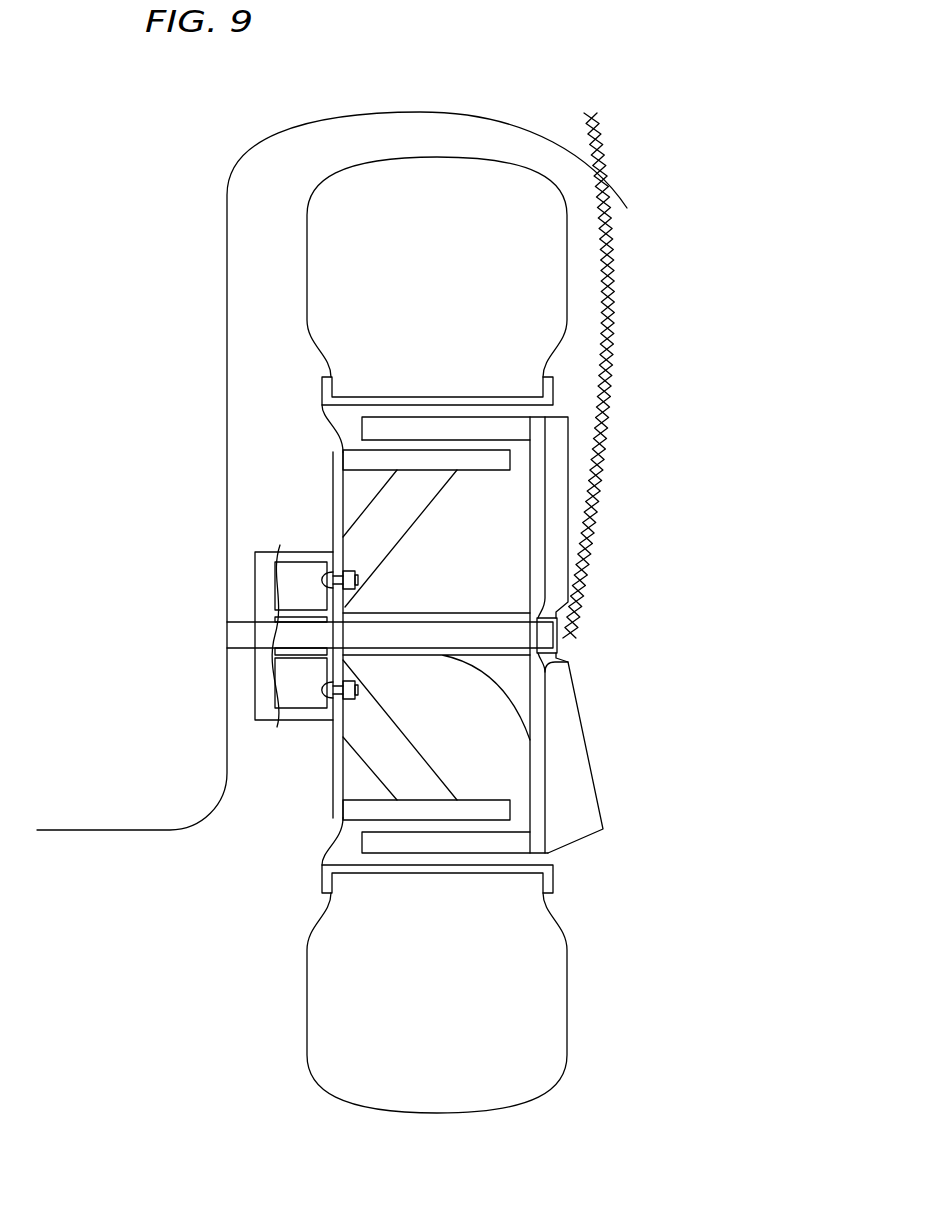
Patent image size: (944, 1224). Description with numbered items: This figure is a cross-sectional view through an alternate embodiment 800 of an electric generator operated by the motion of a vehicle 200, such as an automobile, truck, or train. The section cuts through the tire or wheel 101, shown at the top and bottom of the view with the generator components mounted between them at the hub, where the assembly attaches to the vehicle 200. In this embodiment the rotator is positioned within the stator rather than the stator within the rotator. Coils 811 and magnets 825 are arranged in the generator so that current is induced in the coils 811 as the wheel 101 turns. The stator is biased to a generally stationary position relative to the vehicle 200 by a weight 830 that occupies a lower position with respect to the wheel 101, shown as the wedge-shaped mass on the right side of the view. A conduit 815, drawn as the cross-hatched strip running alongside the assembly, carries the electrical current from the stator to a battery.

The tire 101 is at (458, 288).
The vehicle 200 is at (183, 793).
The alternate embodiment 800 is at (650, 260).
The coils 811 is at (372, 430).
The conduit 815 is at (610, 367).
The magnets 825 is at (353, 460).
The weight 830 is at (575, 753).